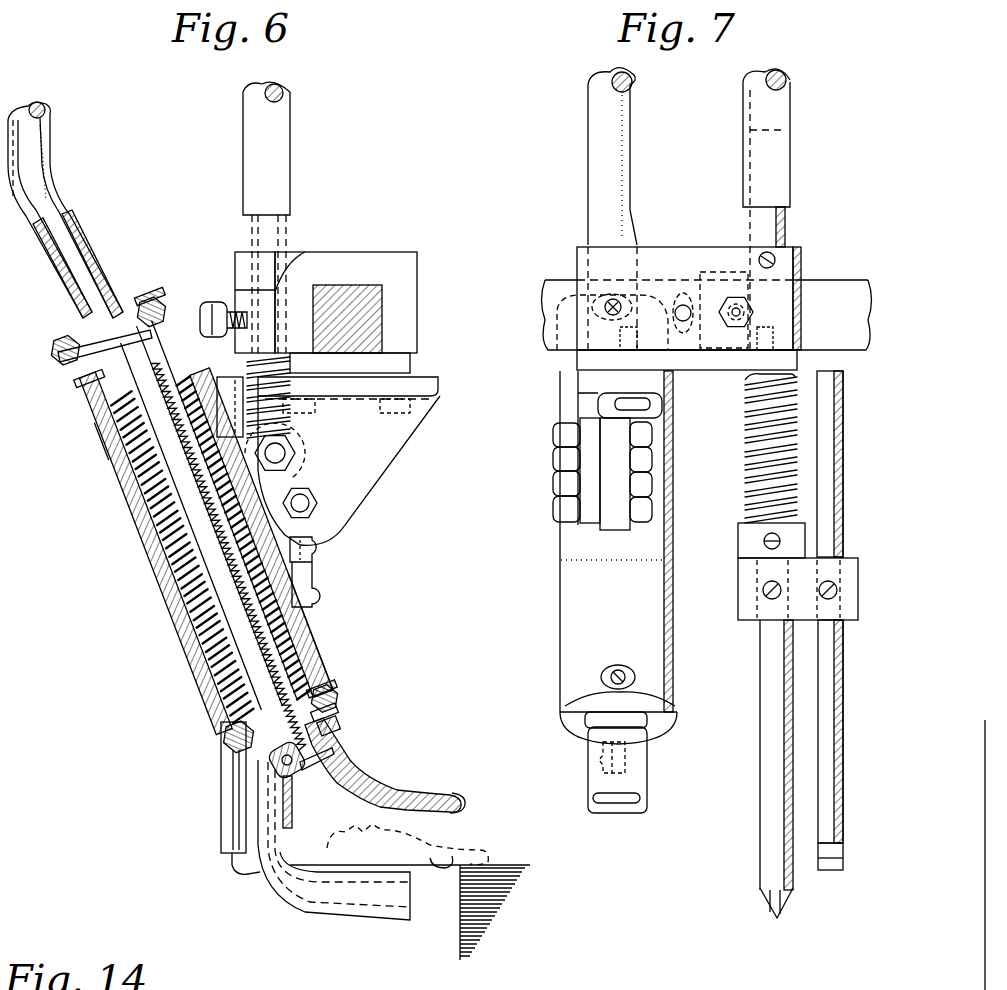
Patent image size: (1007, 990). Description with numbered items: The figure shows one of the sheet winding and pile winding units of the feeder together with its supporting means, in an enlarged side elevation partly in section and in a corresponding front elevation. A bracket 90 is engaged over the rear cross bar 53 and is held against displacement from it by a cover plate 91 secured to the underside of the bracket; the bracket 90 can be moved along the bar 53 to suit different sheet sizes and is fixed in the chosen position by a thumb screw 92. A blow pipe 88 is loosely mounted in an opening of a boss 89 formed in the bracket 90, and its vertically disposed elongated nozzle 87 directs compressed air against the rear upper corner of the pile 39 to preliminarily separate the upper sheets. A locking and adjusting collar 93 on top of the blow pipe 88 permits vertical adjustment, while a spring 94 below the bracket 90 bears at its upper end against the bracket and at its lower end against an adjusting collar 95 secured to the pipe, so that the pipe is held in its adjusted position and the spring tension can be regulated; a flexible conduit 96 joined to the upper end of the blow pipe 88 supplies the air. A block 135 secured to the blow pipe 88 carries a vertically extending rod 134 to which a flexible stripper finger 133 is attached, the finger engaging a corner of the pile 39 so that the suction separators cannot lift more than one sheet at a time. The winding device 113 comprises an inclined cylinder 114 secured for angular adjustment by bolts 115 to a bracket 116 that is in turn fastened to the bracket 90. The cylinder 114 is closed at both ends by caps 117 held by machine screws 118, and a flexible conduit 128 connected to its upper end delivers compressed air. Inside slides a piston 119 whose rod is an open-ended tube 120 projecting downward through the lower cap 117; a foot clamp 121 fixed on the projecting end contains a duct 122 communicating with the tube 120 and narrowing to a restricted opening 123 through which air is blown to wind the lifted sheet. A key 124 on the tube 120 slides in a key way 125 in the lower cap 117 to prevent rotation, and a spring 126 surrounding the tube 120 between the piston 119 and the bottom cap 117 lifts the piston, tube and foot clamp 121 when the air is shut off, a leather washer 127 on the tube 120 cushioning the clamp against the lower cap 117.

In FIG. 6, the flexible conduit 128 is at (32, 140).
In FIG. 7, the flexible conduit 128 is at (590, 128).
In FIG. 6, the flexible conduit 96 is at (245, 116).
In FIG. 7, the flexible conduit 96 is at (754, 108).
In FIG. 6, the boss 89 is at (243, 293).
In FIG. 7, the boss 89 is at (700, 290).
In FIG. 6, the bracket 90 is at (393, 246).
In FIG. 7, the bracket 90 is at (648, 256).
In FIG. 6, the locking and adjusting collar 93 is at (287, 258).
In FIG. 7, the locking and adjusting collar 93 is at (800, 252).
In FIG. 6, the rear cross bar 53 is at (375, 302).
In FIG. 7, the rear cross bar 53 is at (560, 276).
In FIG. 6, the thumb screw 92 is at (214, 306).
In FIG. 7, the thumb screw 92 is at (674, 288).
In FIG. 6, the spring 94 is at (248, 360).
In FIG. 7, the spring 94 is at (762, 437).
In FIG. 6, the cover plate 91 is at (405, 364).
In FIG. 7, the cover plate 91 is at (716, 368).
In FIG. 6, the bracket 116 is at (378, 437).
In FIG. 7, the bracket 116 is at (586, 402).
In FIG. 6, the bolt 115 is at (306, 486).
In FIG. 7, the bolt 115 is at (641, 494).
In FIG. 6, the adjusting collar 95 is at (314, 540).
In FIG. 7, the adjusting collar 95 is at (740, 548).
In FIG. 6, the block 135 is at (306, 585).
In FIG. 7, the block 135 is at (742, 606).
In FIG. 6, the winding device 113 is at (144, 568).
In FIG. 7, the winding device 113 is at (552, 609).
In FIG. 6, the inclined cylinder 114 is at (186, 624).
In FIG. 7, the inclined cylinder 114 is at (566, 563).
In FIG. 6, the spring 126 is at (310, 650).
In FIG. 6, the key 124 is at (312, 628).
In FIG. 6, the piston 119 is at (80, 384).
In FIG. 6, the tube 120 is at (106, 440).
In FIG. 6, the cap 117 is at (128, 312).
In FIG. 6, the machine screw 118 is at (162, 316).
In FIG. 7, the machine screw 118 is at (622, 316).
In FIG. 6, the leather washer 127 is at (326, 712).
In FIG. 7, the leather washer 127 is at (588, 726).
In FIG. 6, the key way 125 is at (334, 727).
In FIG. 6, the duct 122 is at (340, 760).
In FIG. 6, the foot clamp 121 is at (378, 790).
In FIG. 7, the foot clamp 121 is at (634, 779).
In FIG. 6, the restricted opening 123 is at (455, 800).
In FIG. 7, the restricted opening 123 is at (628, 800).
In FIG. 6, the vertically extending rod 134 is at (228, 797).
In FIG. 7, the vertically extending rod 134 is at (828, 763).
In FIG. 6, the flexible stripper finger 133 is at (247, 878).
In FIG. 7, the flexible stripper finger 133 is at (838, 866).
In FIG. 6, the elongated nozzle 87 is at (402, 902).
In FIG. 7, the elongated nozzle 87 is at (784, 904).
In FIG. 6, the pile 39 is at (458, 950).
In FIG. 7, the blow pipe 88 is at (765, 750).